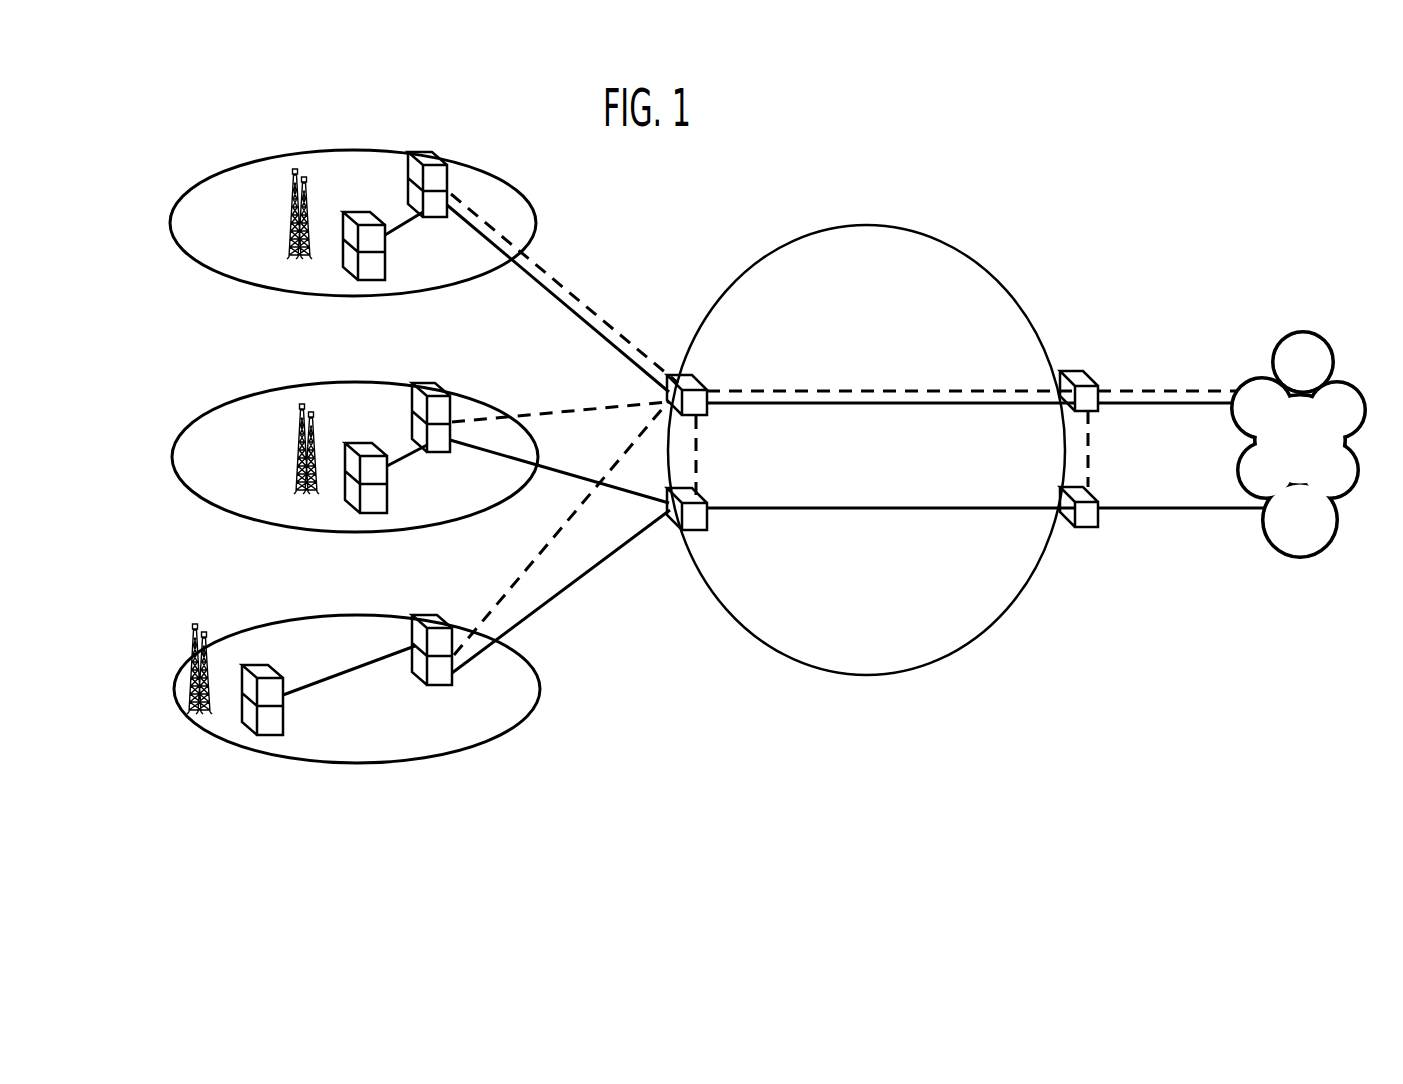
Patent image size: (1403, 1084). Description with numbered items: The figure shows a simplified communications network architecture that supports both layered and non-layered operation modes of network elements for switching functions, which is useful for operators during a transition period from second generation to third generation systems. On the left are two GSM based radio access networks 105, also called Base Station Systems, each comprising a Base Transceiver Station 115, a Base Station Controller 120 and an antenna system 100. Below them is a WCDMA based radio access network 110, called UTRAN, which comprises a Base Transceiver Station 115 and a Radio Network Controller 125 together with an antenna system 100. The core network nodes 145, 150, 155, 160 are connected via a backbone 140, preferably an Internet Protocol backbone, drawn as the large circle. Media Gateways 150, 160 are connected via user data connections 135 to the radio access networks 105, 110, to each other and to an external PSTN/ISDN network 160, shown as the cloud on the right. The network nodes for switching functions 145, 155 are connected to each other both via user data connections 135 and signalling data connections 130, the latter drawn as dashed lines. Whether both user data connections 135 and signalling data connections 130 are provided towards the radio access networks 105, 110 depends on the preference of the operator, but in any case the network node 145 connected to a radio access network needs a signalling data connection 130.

The antenna system 100 is at (290, 214).
The GSM based radio access network 105 is at (352, 150).
The WCDMA based radio access network 110 is at (355, 615).
The Base Transceiver Station 115 is at (386, 265).
The Base Station Controller 120 is at (408, 166).
The Radio Network Controller 125 is at (412, 630).
The signalling data connection 130 is at (616, 324).
The user data connection 135 is at (520, 290).
The backbone 140 is at (870, 226).
The network node for switching functions 145 is at (708, 378).
The Media Gateway 150 is at (708, 522).
The network node for switching functions 155 is at (1080, 370).
The Media Gateway / external PSTN/ISDN network 160 is at (1100, 522).